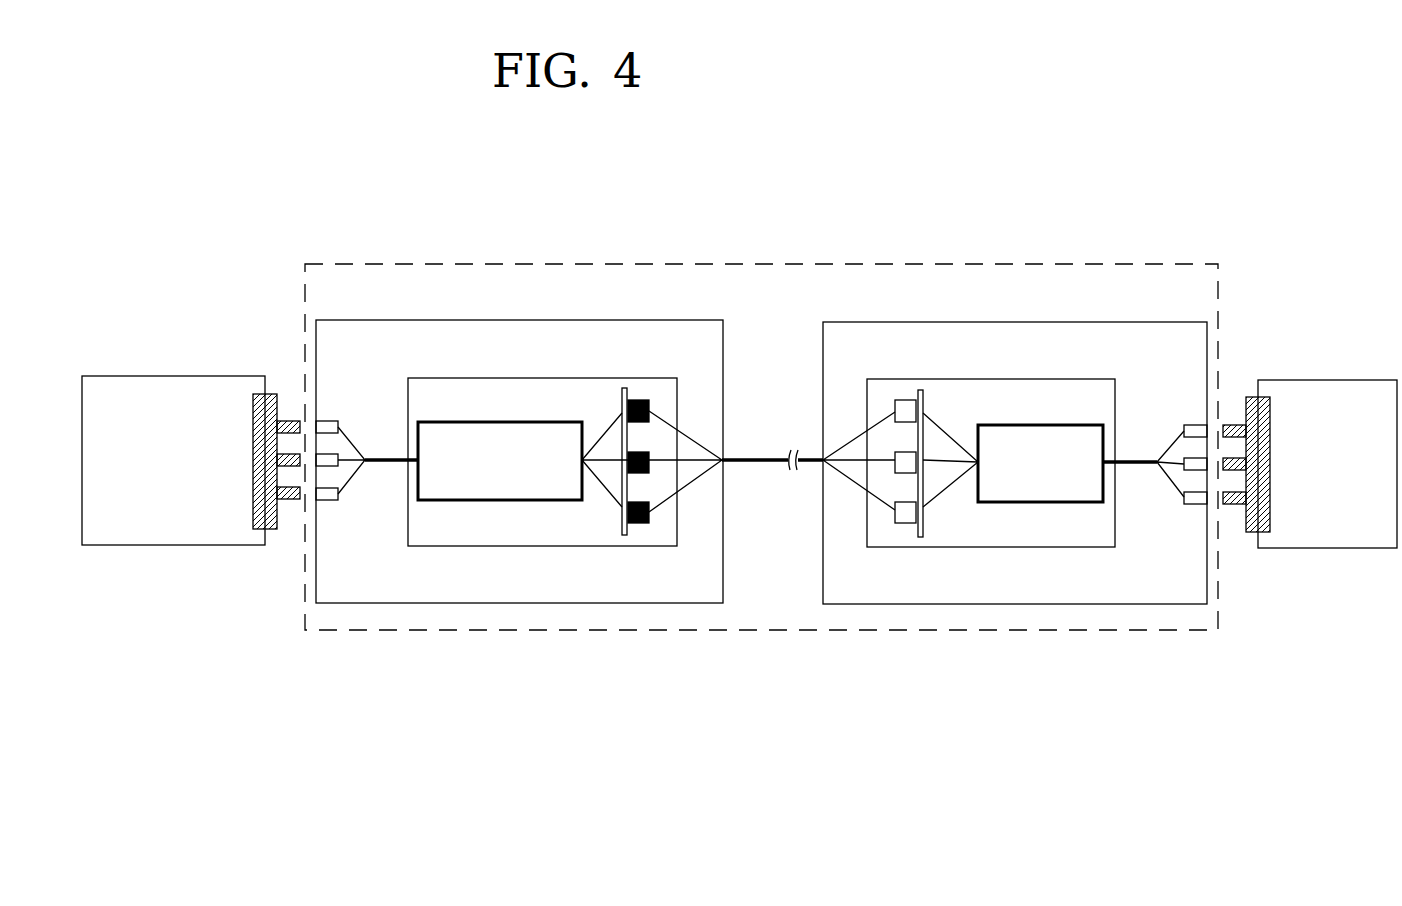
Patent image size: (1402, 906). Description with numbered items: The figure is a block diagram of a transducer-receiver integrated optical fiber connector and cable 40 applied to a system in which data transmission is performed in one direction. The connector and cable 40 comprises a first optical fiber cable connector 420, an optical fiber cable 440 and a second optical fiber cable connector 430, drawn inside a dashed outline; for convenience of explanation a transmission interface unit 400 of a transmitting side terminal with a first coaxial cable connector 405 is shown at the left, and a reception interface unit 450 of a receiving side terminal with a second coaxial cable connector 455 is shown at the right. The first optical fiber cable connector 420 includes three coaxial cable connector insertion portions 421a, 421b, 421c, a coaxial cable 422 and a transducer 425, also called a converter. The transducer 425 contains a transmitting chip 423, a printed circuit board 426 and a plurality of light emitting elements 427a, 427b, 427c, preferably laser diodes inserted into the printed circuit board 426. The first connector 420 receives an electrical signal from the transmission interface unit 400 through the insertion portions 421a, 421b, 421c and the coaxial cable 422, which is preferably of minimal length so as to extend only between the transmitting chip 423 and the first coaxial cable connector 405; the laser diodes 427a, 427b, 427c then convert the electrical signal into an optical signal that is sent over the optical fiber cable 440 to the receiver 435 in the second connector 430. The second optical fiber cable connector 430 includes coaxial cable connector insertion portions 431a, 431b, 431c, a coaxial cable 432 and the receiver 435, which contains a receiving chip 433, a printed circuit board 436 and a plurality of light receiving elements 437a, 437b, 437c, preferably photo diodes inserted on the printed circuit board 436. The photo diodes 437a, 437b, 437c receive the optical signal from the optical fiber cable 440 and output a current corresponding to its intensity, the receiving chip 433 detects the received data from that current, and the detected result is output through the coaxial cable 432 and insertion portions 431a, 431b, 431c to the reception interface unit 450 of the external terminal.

The optical fiber connector and cable 40 is at (823, 632).
The transmission interface unit 400 is at (175, 376).
The first coaxial cable connector 405 is at (265, 394).
The first optical fiber cable connector 420 is at (524, 320).
The coaxial cable connector insertion portion 421a is at (328, 421).
The coaxial cable connector insertion portion 421b is at (338, 458).
The coaxial cable connector insertion portion 421c is at (330, 500).
The coaxial cable 422 is at (380, 464).
The transmitting chip 423 is at (492, 422).
The transducer 425 is at (460, 378).
The printed circuit board 426 is at (623, 403).
The light emitting element 427a is at (637, 400).
The light emitting element 427b is at (650, 473).
The light emitting element 427c is at (622, 533).
The second optical fiber cable connector 430 is at (975, 322).
The coaxial cable connector insertion portion 431a is at (1195, 425).
The coaxial cable connector insertion portion 431b is at (1184, 462).
The coaxial cable connector insertion portion 431c is at (1193, 505).
The coaxial cable 432 is at (1133, 470).
The receiving chip 433 is at (993, 425).
The receiver 435 is at (1012, 379).
The printed circuit board 436 is at (922, 390).
The light receiving element 437a is at (898, 400).
The light receiving element 437b is at (902, 475).
The light receiving element 437c is at (905, 525).
The optical fiber cable 440 is at (762, 456).
The reception interface unit 450 is at (1303, 380).
The second coaxial cable connector 455 is at (1258, 532).